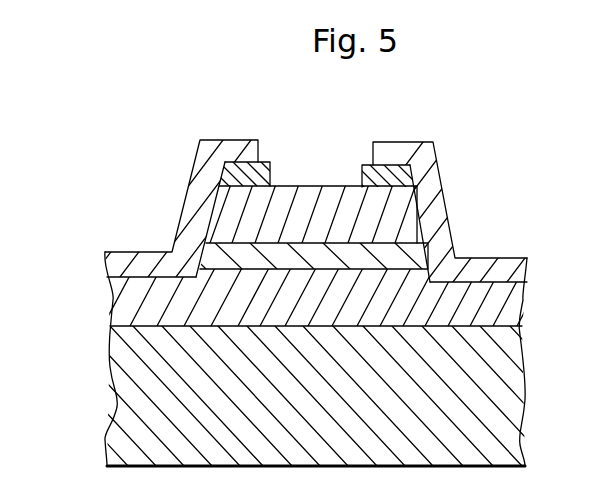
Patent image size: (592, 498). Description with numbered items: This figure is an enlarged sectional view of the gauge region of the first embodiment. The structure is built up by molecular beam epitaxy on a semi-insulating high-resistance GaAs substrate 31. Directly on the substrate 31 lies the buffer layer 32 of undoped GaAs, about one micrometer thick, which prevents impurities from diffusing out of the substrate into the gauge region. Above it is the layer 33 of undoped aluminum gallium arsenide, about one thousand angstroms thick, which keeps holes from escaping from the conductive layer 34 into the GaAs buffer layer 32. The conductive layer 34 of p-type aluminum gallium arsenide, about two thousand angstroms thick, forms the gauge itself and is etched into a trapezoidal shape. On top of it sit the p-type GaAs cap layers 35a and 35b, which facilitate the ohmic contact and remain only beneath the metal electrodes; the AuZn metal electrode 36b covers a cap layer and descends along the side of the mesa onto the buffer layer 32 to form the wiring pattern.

The substrate 31 is at (518, 422).
The buffer layer 32 is at (523, 307).
The layer of undoped AlGaAs 33 is at (215, 255).
The conductive layer 34 is at (325, 184).
The cap layer 35a is at (270, 167).
The cap layer 35b is at (360, 166).
The metal electrode 36b is at (192, 172).